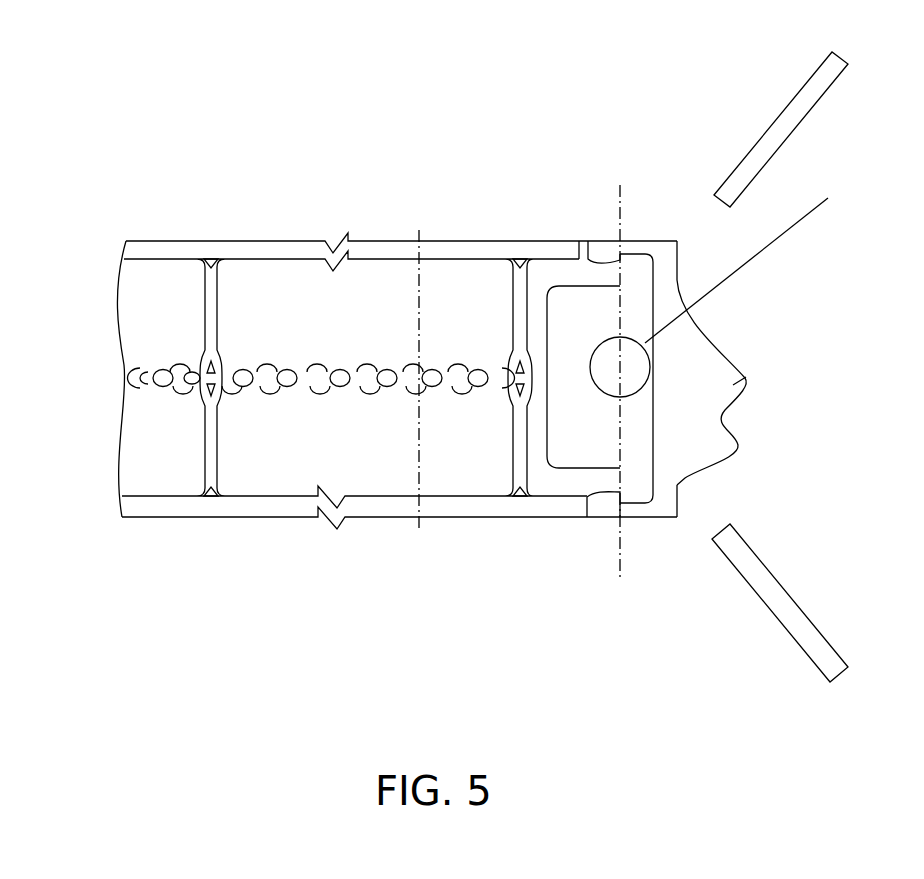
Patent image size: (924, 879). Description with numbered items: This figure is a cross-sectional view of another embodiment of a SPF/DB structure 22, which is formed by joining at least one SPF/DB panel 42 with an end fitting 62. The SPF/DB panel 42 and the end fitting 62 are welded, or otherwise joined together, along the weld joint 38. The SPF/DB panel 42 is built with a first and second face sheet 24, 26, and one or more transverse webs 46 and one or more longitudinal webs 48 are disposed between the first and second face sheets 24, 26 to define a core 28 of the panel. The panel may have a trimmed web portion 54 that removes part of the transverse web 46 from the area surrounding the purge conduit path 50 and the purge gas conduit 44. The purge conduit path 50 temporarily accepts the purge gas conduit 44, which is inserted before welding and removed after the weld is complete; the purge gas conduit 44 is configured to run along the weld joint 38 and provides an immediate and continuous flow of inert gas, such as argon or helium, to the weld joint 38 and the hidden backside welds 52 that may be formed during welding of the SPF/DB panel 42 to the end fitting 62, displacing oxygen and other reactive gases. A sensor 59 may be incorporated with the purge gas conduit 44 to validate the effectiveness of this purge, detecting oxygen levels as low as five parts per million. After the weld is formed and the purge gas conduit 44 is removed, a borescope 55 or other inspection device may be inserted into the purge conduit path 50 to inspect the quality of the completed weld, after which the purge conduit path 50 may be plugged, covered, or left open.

The SPF/DB structure 22 is at (380, 106).
The first face sheet 24 is at (467, 250).
The second face sheet 26 is at (252, 502).
The core 28 is at (380, 468).
The weld joint 38 is at (608, 240).
The SPF/DB panel 42 is at (162, 250).
The purge gas conduit 44 is at (810, 205).
The transverse web 46 is at (247, 278).
The longitudinal web 48 is at (518, 497).
The purge conduit path 50 is at (597, 343).
The hidden backside welds 52 is at (638, 473).
The trimmed web portion 54 is at (560, 468).
The borescope 55 is at (770, 612).
The sensor 59 is at (770, 122).
The end fitting 62 is at (743, 375).